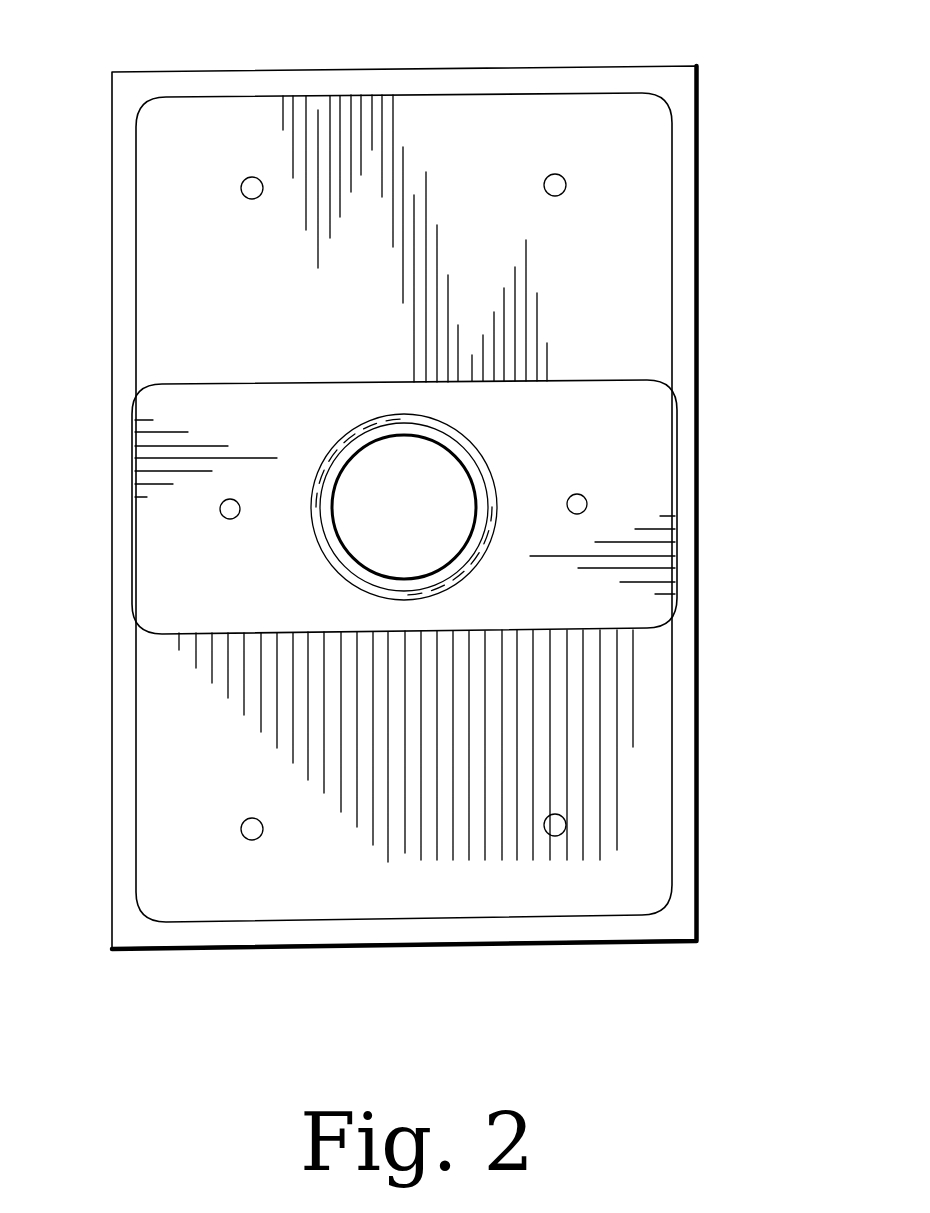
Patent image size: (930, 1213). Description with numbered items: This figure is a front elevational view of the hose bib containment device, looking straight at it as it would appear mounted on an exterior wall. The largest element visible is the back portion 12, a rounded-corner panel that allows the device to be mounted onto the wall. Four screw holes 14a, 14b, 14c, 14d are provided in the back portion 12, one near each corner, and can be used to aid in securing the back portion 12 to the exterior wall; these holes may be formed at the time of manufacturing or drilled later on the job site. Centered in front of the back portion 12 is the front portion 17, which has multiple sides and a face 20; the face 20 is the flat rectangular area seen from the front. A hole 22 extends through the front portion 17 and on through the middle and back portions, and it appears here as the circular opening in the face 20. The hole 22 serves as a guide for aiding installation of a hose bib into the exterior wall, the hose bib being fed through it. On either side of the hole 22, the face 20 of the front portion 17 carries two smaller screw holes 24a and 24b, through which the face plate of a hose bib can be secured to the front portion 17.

The back portion 12 is at (198, 291).
The screw hole 14a is at (252, 177).
The screw hole 14b is at (554, 174).
The screw hole 14c is at (252, 840).
The screw hole 14d is at (555, 836).
The front portion 17 is at (745, 390).
The face 20 is at (185, 575).
The hole 22 is at (423, 530).
The screw hole 24a is at (220, 508).
The screw hole 24b is at (588, 505).